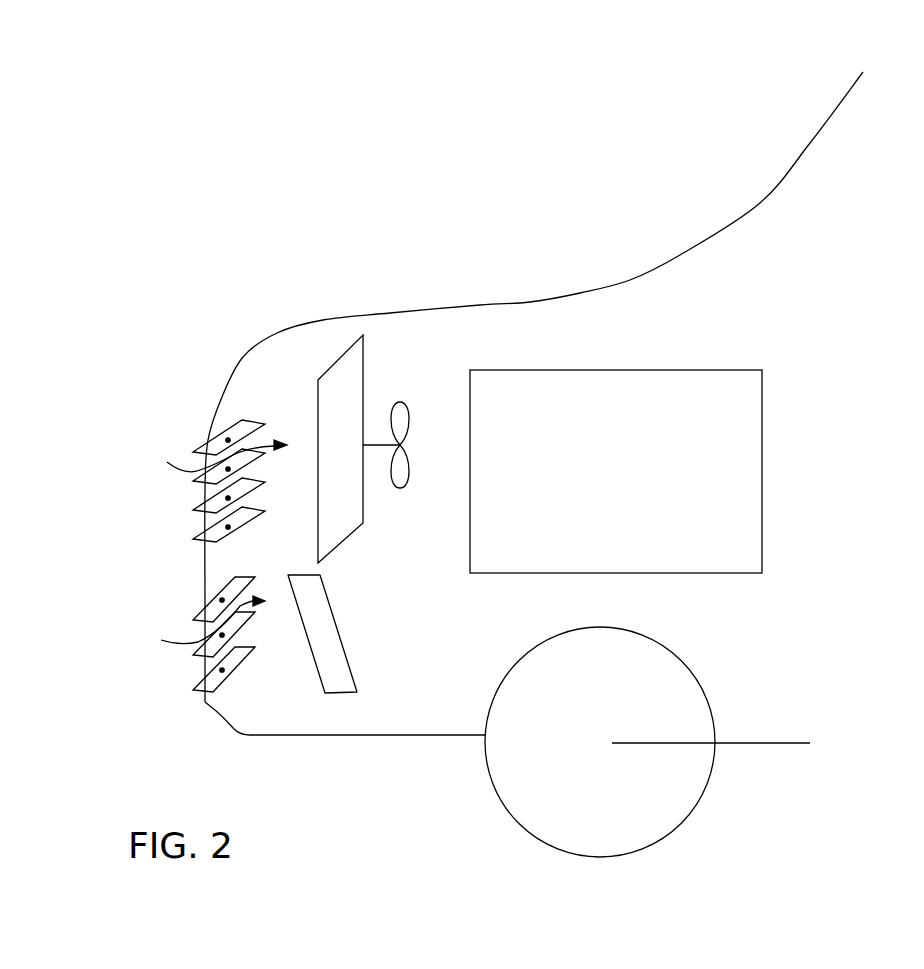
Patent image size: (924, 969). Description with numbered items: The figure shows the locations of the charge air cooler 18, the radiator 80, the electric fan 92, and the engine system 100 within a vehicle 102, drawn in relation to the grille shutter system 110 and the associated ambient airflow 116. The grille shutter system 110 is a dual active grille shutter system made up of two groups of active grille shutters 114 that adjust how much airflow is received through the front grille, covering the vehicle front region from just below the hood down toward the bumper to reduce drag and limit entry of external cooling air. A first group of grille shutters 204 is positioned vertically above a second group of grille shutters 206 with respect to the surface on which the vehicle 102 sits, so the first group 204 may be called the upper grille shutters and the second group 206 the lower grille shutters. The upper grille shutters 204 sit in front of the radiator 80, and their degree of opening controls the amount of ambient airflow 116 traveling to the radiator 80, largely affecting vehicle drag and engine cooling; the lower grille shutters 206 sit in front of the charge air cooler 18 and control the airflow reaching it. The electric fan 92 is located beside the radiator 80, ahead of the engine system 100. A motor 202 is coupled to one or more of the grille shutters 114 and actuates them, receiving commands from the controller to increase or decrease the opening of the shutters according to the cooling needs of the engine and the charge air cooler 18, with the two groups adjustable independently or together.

The charge air cooler 18 is at (313, 662).
The radiator 80 is at (342, 545).
The electric fan 92 is at (402, 488).
The engine system 100 is at (470, 370).
The vehicle 102 is at (748, 203).
The grille shutter system 110 is at (442, 464).
The active grille shutter 114 is at (243, 420).
The ambient airflow 116 is at (210, 544).
The motor 202 is at (228, 527).
The first group of active grille shutters 204 is at (204, 477).
The second group of active grille shutters 206 is at (152, 663).